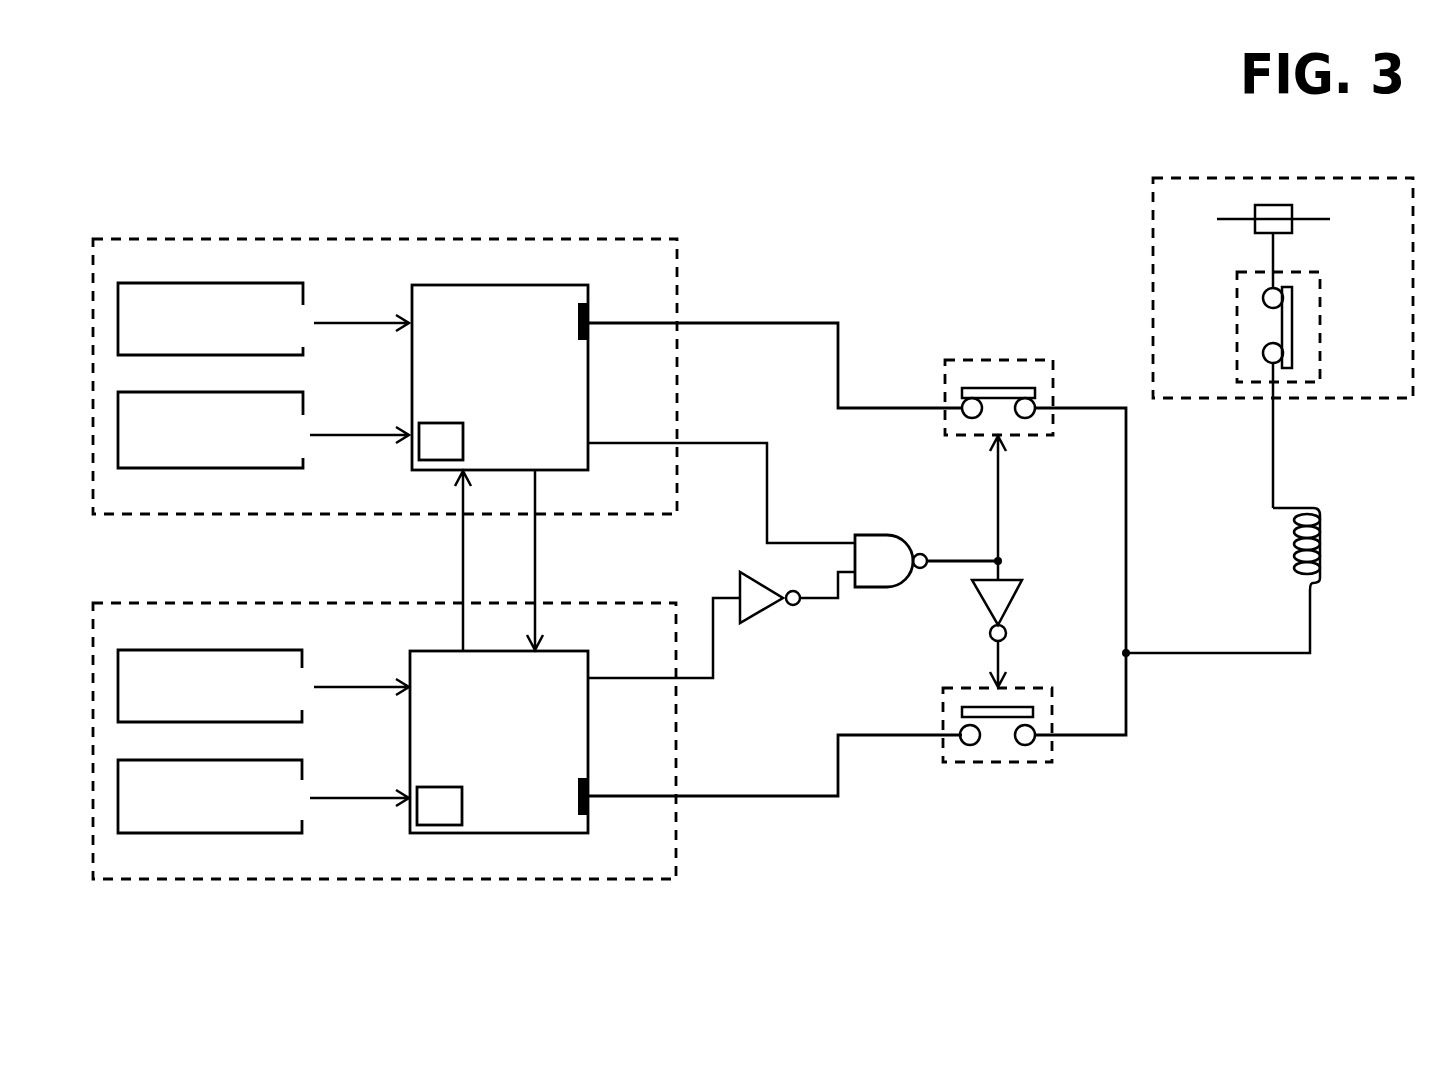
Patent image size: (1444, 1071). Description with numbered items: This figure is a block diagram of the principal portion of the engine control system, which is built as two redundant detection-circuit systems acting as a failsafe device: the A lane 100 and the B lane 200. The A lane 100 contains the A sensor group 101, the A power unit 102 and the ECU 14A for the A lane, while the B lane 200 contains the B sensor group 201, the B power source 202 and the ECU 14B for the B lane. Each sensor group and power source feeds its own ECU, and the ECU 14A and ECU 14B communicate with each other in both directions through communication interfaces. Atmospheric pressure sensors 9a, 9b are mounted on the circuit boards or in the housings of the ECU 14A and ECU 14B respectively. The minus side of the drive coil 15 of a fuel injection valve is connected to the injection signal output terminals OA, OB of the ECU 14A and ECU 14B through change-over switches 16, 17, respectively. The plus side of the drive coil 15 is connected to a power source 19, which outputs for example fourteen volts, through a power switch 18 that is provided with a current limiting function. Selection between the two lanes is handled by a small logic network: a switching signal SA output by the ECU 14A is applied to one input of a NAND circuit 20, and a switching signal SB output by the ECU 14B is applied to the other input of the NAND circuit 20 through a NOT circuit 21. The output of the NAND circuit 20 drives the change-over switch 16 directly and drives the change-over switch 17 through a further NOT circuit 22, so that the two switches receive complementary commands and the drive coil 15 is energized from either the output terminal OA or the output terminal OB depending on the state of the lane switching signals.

The A lane 100 is at (600, 238).
The A power unit 102 is at (303, 300).
The A sensor group 101 is at (303, 412).
The ECU for the A lane 14A is at (500, 285).
The atmospheric pressure sensor 9a is at (419, 455).
The injection signal output terminal OA is at (588, 306).
The B lane 200 is at (598, 882).
The B power source 202 is at (302, 665).
The B sensor group 201 is at (302, 775).
The ECU for the B lane 14B is at (500, 835).
The atmospheric pressure sensor 9b is at (417, 815).
The injection signal output terminal OB is at (590, 800).
The switching signal SA is at (767, 480).
The switching signal SB is at (713, 690).
The NAND circuit 20 is at (872, 535).
The NOT circuit 21 is at (760, 612).
The NOT circuit 22 is at (1012, 606).
The change-over switch 16 is at (1003, 360).
The change-over switch 17 is at (1005, 762).
The power switch 18 is at (1320, 322).
The power source 19 is at (1292, 213).
The drive coil 15 is at (1333, 550).